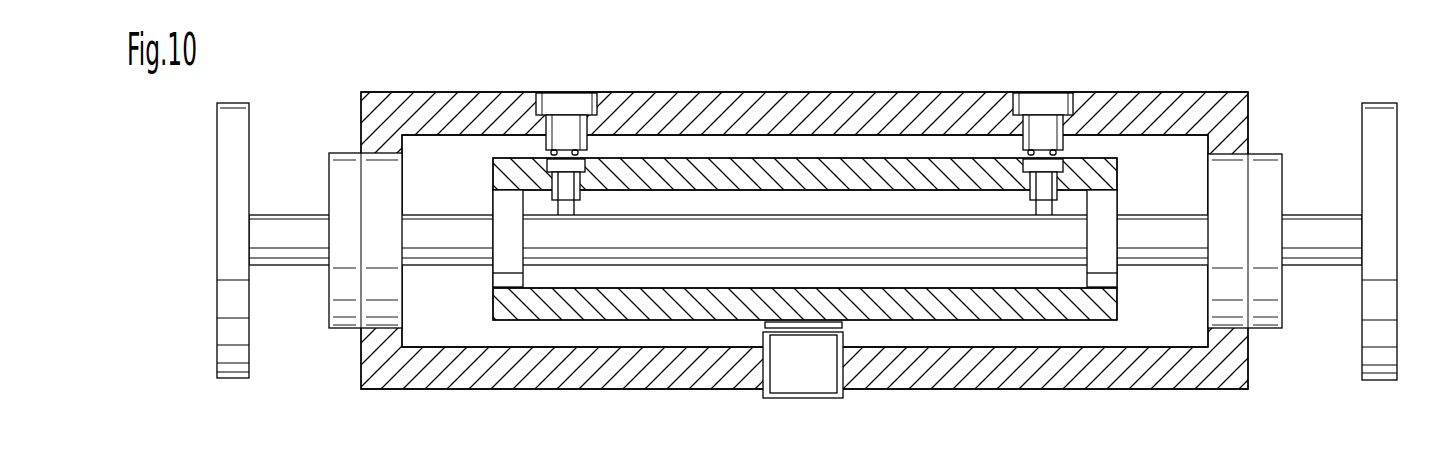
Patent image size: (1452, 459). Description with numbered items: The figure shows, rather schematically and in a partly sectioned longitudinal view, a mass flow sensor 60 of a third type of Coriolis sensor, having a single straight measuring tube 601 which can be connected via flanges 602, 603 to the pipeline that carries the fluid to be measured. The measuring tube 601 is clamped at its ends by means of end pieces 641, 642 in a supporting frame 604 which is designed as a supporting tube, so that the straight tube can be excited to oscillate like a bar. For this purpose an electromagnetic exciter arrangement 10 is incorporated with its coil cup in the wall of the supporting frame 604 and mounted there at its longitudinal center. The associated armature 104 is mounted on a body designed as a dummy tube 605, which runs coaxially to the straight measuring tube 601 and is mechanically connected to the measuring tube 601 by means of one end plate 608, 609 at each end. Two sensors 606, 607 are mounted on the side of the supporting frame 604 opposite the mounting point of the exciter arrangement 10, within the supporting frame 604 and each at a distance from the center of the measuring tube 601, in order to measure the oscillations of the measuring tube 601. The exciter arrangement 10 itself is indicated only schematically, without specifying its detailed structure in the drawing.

The mass flow sensor 60 is at (428, 82).
The measuring tube 601 is at (730, 223).
The flange 602 is at (235, 105).
The flange 603 is at (1385, 110).
The supporting frame 604 is at (502, 105).
The dummy tube 605 is at (906, 163).
The sensor 606 is at (588, 100).
The sensor 607 is at (1056, 97).
The end plate 608 is at (503, 278).
The end plate 609 is at (1105, 278).
The end piece 641 is at (343, 163).
The end piece 642 is at (1275, 160).
The exciter arrangement 10 is at (826, 390).
The armature 104 is at (840, 325).